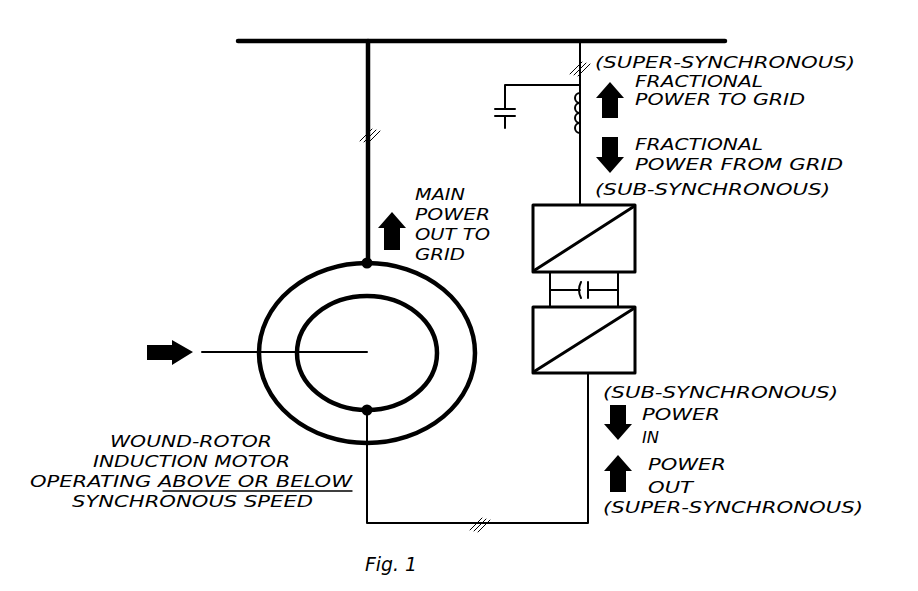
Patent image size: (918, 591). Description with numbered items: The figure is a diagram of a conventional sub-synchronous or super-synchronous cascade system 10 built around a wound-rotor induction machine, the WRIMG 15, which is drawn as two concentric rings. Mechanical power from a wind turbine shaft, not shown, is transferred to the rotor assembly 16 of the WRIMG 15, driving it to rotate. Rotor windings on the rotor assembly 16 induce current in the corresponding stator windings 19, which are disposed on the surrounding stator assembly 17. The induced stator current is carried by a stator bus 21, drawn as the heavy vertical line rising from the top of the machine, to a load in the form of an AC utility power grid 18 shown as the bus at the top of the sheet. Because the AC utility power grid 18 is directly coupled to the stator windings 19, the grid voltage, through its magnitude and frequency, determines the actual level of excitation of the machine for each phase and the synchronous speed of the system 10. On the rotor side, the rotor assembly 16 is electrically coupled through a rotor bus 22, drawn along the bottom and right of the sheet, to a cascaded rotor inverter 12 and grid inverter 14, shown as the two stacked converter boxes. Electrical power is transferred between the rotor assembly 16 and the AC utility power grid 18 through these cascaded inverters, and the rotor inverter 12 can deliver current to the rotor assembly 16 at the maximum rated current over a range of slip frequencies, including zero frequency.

The conventional system 10 is at (151, 151).
The rotor inverter 12 is at (637, 318).
The grid inverter 14 is at (635, 260).
The WRIMG 15 is at (240, 389).
The rotor assembly 16 is at (435, 376).
The stator assembly 17 is at (294, 284).
The AC utility power grid 18 is at (268, 44).
The stator windings 19 is at (364, 260).
The stator bus 21 is at (366, 100).
The rotor bus 22 is at (438, 522).